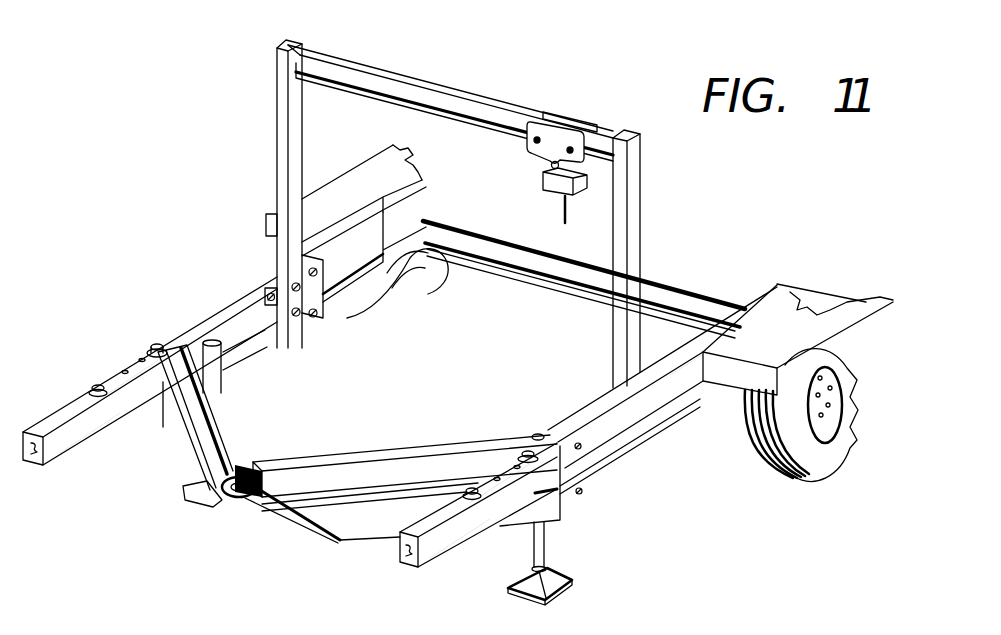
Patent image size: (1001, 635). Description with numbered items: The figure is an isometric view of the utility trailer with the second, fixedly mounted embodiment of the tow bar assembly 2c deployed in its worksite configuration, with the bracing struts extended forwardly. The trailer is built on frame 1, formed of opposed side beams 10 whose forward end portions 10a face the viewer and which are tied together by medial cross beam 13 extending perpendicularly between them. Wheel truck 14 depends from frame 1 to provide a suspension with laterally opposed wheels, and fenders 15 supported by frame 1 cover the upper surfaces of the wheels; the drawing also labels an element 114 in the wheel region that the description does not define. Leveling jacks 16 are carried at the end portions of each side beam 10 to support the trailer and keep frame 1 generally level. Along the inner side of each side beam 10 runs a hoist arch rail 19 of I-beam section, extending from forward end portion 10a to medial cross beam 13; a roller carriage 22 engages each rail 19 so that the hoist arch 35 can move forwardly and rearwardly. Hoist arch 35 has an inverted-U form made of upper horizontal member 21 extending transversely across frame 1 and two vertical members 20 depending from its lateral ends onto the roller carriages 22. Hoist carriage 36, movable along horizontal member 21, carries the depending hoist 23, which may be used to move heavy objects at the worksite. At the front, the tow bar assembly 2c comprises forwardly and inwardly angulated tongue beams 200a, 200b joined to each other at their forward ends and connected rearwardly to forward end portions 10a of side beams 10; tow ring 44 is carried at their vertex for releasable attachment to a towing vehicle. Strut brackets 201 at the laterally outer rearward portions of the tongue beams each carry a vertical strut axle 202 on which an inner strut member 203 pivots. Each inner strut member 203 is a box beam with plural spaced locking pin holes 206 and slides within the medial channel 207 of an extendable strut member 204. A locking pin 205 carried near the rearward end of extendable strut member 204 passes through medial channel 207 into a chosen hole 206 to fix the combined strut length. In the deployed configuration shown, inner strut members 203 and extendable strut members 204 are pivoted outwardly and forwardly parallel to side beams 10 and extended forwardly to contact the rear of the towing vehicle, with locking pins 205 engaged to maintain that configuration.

The frame 1 is at (741, 302).
The tow bar assembly 2c is at (318, 445).
The side beams 10 is at (330, 303).
The forward end portions 10a is at (226, 294).
The medial cross beam 13 is at (560, 276).
The wheel truck 14 is at (794, 485).
The fenders 15 is at (325, 198).
The leveling jacks 16 is at (183, 488).
The hoist arch rails 19 is at (232, 340).
The vertical members 20 is at (268, 228).
The upper horizontal member 21 is at (360, 80).
The roller carriage 22 is at (262, 308).
The hoist 23 is at (580, 188).
The hoist arch 35 is at (486, 93).
The hoist carriage 36 is at (551, 163).
The tow ring 44 is at (246, 500).
The wheel well 114 is at (474, 336).
The tongue beam 200a is at (378, 520).
The tongue beam 200b is at (226, 420).
The strut bracket 201 is at (163, 344).
The strut axle 202 is at (154, 347).
The inner strut member 203 is at (130, 394).
The extendable strut member 204 is at (92, 424).
The locking pin 205 is at (95, 387).
The locking pin holes 206 is at (125, 370).
The medial channel 207 is at (44, 448).